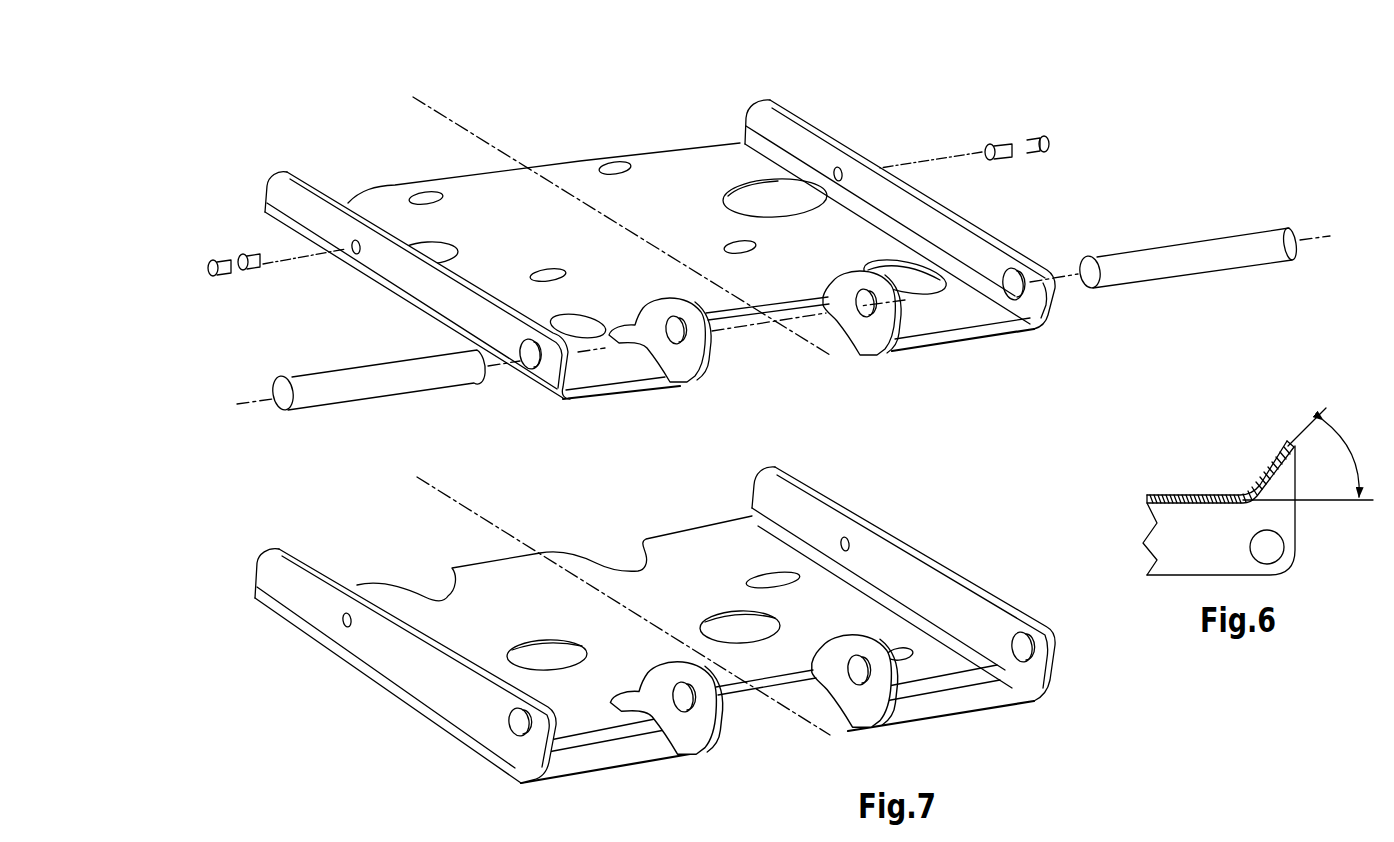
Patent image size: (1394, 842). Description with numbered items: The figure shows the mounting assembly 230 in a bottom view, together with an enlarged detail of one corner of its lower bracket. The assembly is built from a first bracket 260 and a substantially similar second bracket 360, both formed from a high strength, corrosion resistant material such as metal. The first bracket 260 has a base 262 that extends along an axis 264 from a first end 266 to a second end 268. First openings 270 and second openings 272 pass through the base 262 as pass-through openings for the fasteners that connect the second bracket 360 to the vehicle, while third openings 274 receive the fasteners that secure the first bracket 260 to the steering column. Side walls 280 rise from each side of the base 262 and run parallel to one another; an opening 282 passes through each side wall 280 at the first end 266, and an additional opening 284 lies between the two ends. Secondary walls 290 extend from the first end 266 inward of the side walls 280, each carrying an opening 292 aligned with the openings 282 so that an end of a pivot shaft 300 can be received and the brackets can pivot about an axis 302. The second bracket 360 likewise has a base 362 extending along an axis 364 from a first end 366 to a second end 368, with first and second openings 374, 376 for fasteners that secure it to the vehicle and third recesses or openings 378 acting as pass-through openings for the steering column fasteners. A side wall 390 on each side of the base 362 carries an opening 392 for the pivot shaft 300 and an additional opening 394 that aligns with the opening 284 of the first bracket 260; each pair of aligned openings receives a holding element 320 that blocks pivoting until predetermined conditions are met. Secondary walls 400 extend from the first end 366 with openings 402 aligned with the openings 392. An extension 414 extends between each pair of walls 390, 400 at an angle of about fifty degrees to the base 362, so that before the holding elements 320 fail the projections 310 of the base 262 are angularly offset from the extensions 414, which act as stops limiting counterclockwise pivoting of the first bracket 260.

In FIG. 7, the mounting assembly 230 is at (290, 489).
In FIG. 7, the first bracket 260 is at (968, 125).
In FIG. 7, the base 262 is at (682, 197).
In FIG. 7, the axis 264 is at (450, 123).
In FIG. 7, the first end 266 is at (600, 405).
In FIG. 7, the second end 268 is at (345, 178).
In FIG. 7, the first openings 270 is at (572, 320).
In FIG. 7, the second openings 272 is at (416, 241).
In FIG. 7, the third openings 274 is at (737, 243).
In FIG. 7, the side walls 280 is at (670, 266).
In FIG. 7, the opening 282 is at (527, 368).
In FIG. 7, the additional openings 284 is at (343, 246).
In FIG. 7, the secondary walls 290 is at (697, 333).
In FIG. 7, the opening 292 is at (680, 345).
In FIG. 7, the pivot shaft 300 is at (780, 314).
In FIG. 7, the axis 302 is at (247, 406).
In FIG. 7, the projections 310 is at (617, 372).
In FIG. 7, the holding element 320 is at (232, 276).
In FIG. 7, the second bracket 360 is at (1075, 680).
In FIG. 7, the base 362 is at (655, 603).
In FIG. 6, the base 362 is at (1162, 493).
In FIG. 7, the axis 364 is at (462, 478).
In FIG. 7, the first end 366 is at (592, 790).
In FIG. 7, the second end 368 is at (397, 575).
In FIG. 7, the first openings 374 is at (907, 643).
In FIG. 7, the second openings 376 is at (780, 573).
In FIG. 7, the third recesses or openings 378 is at (537, 648).
In FIG. 7, the side wall 390 is at (425, 660).
In FIG. 6, the side wall 390 is at (1290, 527).
In FIG. 7, the opening 392 is at (510, 727).
In FIG. 6, the opening 392 is at (1275, 558).
In FIG. 7, the additional openings 394 is at (342, 632).
In FIG. 7, the secondary walls 400 is at (697, 722).
In FIG. 7, the opening 402 is at (682, 717).
In FIG. 7, the extension 414 is at (610, 750).
In FIG. 6, the extension 414 is at (1267, 467).